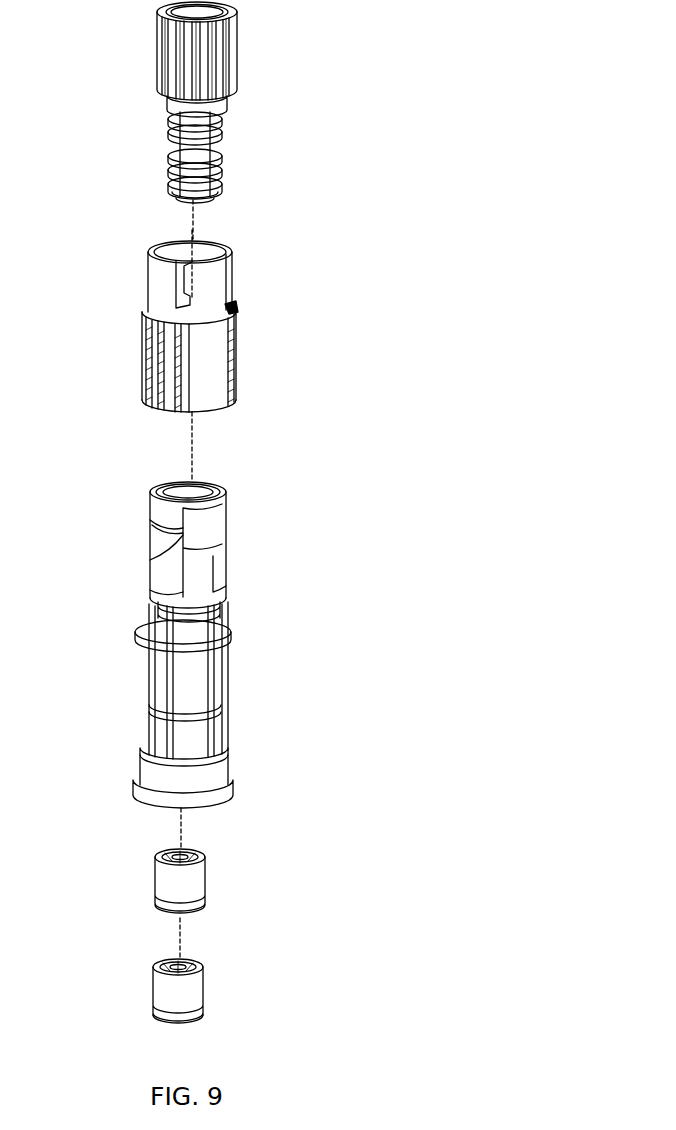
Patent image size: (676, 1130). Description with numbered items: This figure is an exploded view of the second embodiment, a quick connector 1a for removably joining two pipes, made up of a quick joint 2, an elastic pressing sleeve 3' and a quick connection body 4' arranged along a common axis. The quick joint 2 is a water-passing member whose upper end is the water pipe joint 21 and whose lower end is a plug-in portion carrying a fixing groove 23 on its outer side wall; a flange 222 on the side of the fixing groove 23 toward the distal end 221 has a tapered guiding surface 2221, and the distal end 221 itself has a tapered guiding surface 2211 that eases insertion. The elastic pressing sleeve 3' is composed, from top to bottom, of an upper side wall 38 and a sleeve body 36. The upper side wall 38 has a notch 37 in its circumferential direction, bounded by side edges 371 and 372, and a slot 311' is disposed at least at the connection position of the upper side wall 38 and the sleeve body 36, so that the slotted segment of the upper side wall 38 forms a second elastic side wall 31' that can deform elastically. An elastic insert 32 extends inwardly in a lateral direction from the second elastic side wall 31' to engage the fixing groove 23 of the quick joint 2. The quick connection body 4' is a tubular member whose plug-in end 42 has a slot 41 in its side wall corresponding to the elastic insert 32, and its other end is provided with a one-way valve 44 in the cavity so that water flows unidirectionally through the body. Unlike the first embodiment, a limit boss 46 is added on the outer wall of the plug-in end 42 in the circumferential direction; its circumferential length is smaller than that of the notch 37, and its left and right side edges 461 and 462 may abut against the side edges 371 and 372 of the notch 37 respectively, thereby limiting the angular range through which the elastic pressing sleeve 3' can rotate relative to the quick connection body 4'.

The quick connector 1a is at (463, 92).
The quick joint 2 is at (342, 97).
The water pipe joint 21 is at (240, 52).
The fixing groove 23 is at (223, 113).
The flange 222 is at (175, 121).
The tapered guiding surface 2221 is at (178, 133).
The distal end 221 is at (222, 185).
The tapered guiding surface 2211 is at (214, 199).
The elastic pressing sleeve 3' is at (302, 327).
The second elastic side wall 31' is at (146, 276).
The slot 311' is at (111, 363).
The elastic insert 32 is at (200, 283).
The sleeve body 36 is at (218, 372).
The notch 37 is at (238, 330).
The side edge 371 is at (175, 322).
The side edge 372 is at (238, 303).
The upper side wall 38 is at (232, 252).
The quick connection body 4' is at (297, 703).
The slot 41 is at (175, 520).
The plug-in end 42 is at (165, 484).
The limit boss 46 is at (207, 530).
The left side edge 461 is at (180, 538).
The right side edge 462 is at (228, 525).
The one-way valve 44 is at (195, 888).